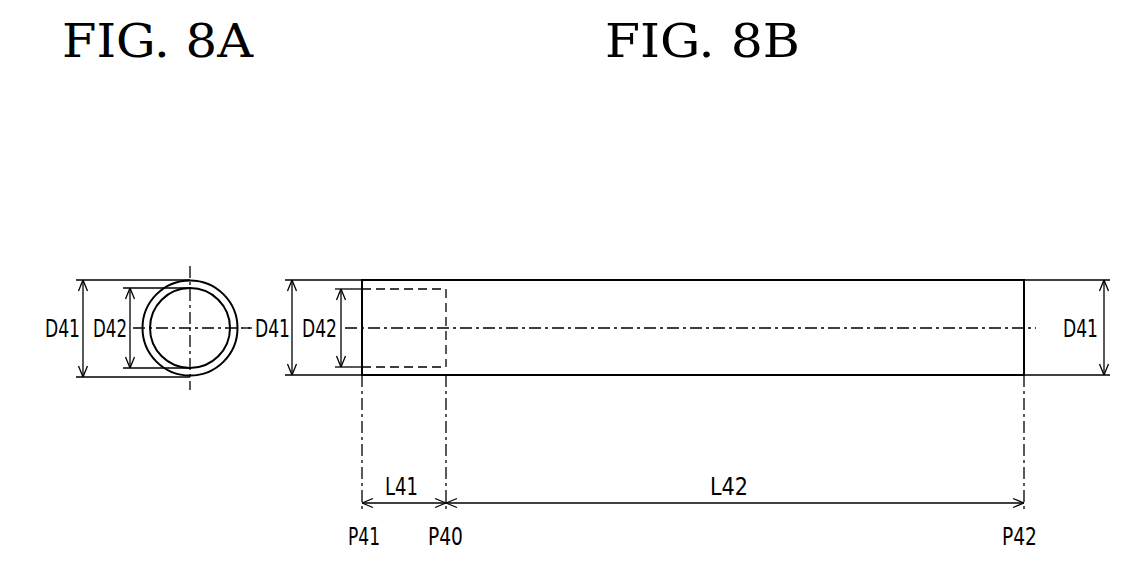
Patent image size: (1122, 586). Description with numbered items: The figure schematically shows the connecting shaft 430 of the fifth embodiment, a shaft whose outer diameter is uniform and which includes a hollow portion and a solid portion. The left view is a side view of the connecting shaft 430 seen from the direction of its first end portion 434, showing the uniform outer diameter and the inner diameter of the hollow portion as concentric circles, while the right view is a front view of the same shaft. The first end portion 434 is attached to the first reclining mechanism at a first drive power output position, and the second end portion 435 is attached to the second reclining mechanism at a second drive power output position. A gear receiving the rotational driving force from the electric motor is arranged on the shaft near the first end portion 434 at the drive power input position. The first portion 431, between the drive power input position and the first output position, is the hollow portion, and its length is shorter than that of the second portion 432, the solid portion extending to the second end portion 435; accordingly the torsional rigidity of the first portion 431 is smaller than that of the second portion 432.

The connecting shaft 430 is at (704, 243).
The first portion 431 is at (407, 377).
The second portion 432 is at (815, 376).
The first end portion 434 is at (380, 280).
The second end portion 435 is at (1007, 280).